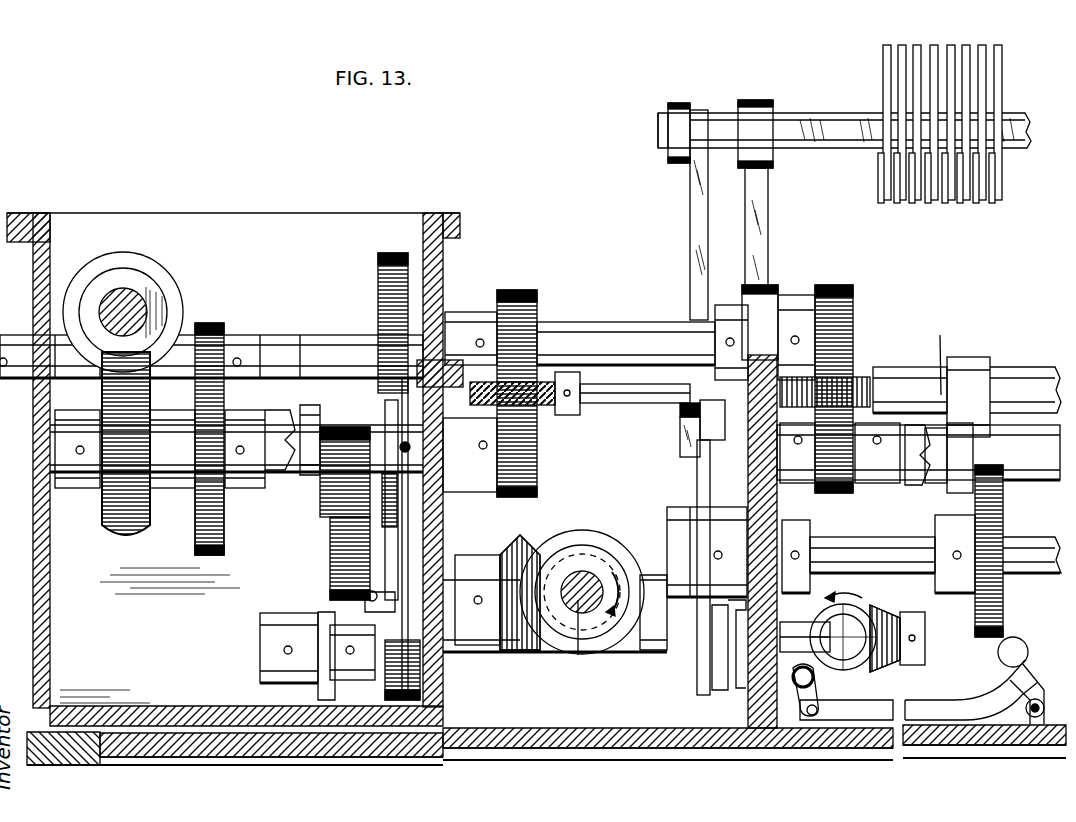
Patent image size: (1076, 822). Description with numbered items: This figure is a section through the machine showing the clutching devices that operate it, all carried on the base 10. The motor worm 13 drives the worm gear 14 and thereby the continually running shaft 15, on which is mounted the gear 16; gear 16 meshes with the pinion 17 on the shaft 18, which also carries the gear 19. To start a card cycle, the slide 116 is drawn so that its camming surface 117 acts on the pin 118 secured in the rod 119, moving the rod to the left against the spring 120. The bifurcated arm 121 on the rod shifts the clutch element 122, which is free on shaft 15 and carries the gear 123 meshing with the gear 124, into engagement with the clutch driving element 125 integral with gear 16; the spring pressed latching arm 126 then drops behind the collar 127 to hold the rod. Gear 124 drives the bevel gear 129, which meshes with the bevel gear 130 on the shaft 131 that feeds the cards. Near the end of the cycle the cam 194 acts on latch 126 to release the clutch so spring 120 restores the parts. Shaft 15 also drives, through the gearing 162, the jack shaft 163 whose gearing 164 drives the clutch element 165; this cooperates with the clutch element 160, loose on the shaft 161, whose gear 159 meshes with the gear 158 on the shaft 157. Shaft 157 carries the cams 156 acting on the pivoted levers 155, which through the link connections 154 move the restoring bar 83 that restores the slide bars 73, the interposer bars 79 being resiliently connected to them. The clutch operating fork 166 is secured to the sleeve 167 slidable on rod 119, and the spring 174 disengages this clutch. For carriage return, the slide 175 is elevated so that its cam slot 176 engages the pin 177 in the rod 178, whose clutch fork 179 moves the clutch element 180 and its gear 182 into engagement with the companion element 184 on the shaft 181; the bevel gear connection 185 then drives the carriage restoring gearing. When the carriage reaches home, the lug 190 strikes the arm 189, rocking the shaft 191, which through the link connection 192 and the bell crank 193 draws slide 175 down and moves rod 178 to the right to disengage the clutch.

The base 10 is at (565, 752).
The worm 13 is at (140, 272).
The worm gear 14 is at (110, 540).
The shaft 15 is at (176, 440).
The gear 16 is at (212, 556).
The pinion 17 is at (205, 322).
The shaft 18 is at (293, 356).
The gear 19 is at (388, 253).
The slide bar 73 is at (985, 52).
The interposer bar 79 is at (992, 205).
The restoring bar 83 is at (812, 130).
The slide 116 is at (682, 445).
The camming surface 117 is at (700, 426).
The pin 118 is at (682, 414).
The rod 119 is at (596, 398).
The spring 120 is at (549, 375).
The bifurcated arm 121 is at (318, 497).
The clutch element 122 is at (290, 412).
The gear 123 is at (330, 500).
The gear 124 is at (340, 555).
The clutch driving element 125 is at (240, 488).
The latching arm 126 is at (402, 508).
The collar 127 is at (444, 345).
The bevel gear 129 is at (523, 648).
The bevel gear 130 is at (594, 548).
The shaft 131 is at (578, 615).
The link connections 154 is at (684, 105).
The pivoted levers 155 is at (690, 202).
The cams 156 is at (678, 650).
The shaft 157 is at (904, 522).
The gear 158 is at (1003, 519).
The gear 159 is at (1003, 488).
The clutch element 160 is at (941, 353).
The shaft 161 is at (1008, 460).
The gearing 162 is at (518, 293).
The jack shaft 163 is at (632, 336).
The gearing 164 is at (834, 293).
The clutch element 165 is at (880, 418).
The clutch operating fork 166 is at (950, 358).
The sleeve 167 is at (1030, 368).
The spring 174 is at (860, 374).
The slide 175 is at (745, 700).
The cam slot 176 is at (712, 695).
The pin 177 is at (695, 636).
The rod 178 is at (644, 650).
The clutch fork 179 is at (338, 690).
The clutch element 180 is at (368, 630).
The shaft 181 is at (328, 677).
The gear 182 is at (382, 700).
The companion clutch element 184 is at (280, 633).
The bevel gear connection 185 is at (868, 620).
The arm 189 is at (1030, 668).
The lug 190 is at (1014, 637).
The shaft 191 is at (1033, 717).
The link connection 192 is at (924, 710).
The bell crank 193 is at (814, 688).
The cam 194 is at (395, 565).